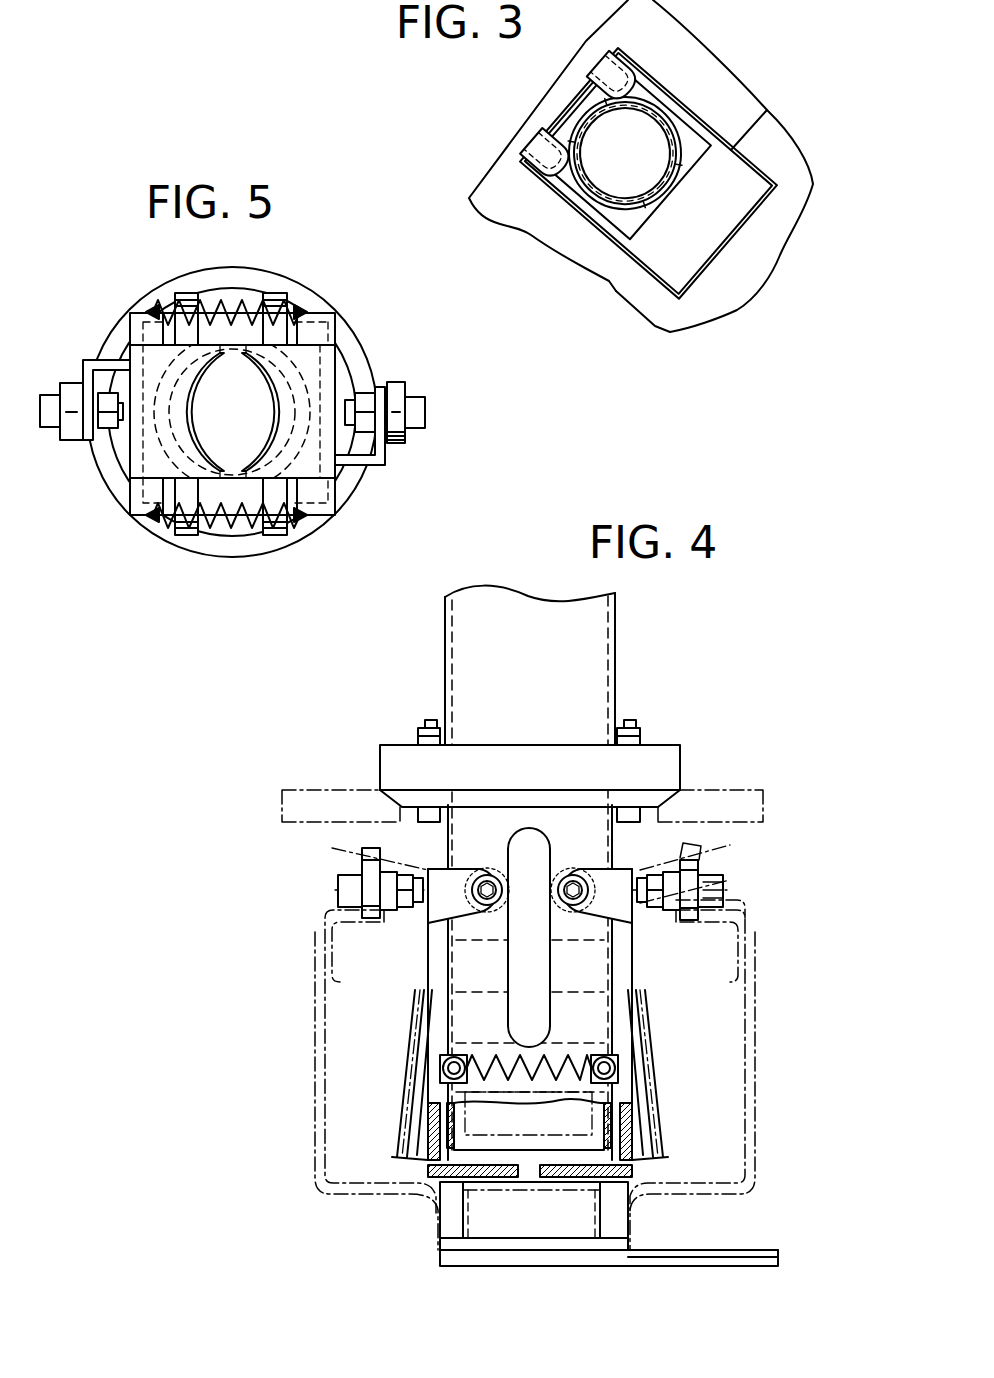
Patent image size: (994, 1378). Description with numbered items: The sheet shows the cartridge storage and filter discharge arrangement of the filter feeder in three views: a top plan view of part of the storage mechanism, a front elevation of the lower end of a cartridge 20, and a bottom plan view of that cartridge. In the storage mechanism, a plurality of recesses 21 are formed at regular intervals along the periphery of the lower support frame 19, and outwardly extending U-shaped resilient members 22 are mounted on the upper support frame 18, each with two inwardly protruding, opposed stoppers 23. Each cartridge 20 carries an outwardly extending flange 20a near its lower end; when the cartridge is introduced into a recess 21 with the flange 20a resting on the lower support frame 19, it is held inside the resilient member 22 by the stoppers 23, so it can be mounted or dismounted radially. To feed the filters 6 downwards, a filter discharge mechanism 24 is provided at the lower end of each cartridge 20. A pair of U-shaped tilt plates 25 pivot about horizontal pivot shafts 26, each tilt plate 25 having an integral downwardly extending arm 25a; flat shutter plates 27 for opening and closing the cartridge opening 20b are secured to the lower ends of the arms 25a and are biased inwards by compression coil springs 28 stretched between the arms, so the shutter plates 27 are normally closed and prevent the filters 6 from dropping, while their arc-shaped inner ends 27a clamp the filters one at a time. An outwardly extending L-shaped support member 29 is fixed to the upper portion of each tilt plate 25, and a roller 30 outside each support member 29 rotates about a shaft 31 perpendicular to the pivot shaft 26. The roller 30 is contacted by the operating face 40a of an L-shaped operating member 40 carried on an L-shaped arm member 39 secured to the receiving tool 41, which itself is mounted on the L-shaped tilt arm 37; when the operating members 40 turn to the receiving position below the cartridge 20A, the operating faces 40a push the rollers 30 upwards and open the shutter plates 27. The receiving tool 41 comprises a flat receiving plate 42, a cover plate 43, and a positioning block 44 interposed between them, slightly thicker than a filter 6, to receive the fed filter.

In FIG. 3, the filter 6 is at (680, 170).
In FIG. 4, the filter 6 is at (660, 1138).
In FIG. 3, the upper support frame 18 is at (645, 307).
In FIG. 3, the lower support frame 19 is at (521, 235).
In FIG. 4, the lower support frame 19 is at (740, 788).
In FIG. 5, the cartridge 20 is at (228, 314).
In FIG. 4, the cartridge 20 is at (530, 982).
In FIG. 3, the cartridge 20A is at (620, 207).
In FIG. 4, the cartridge 20A is at (615, 655).
In FIG. 3, the flange 20a is at (620, 223).
In FIG. 4, the flange 20a is at (675, 753).
In FIG. 5, the opening 20b is at (210, 405).
In FIG. 4, the opening 20b is at (533, 1153).
In FIG. 3, the recess 21 is at (540, 150).
In FIG. 3, the resilient member 22 is at (562, 205).
In FIG. 3, the stopper 23 is at (546, 140).
In FIG. 4, the filter discharge mechanism 24 is at (783, 822).
In FIG. 5, the tilt plate 25 is at (337, 363).
In FIG. 4, the tilt plate 25 is at (426, 955).
In FIG. 4, the arm 25a is at (644, 975).
In FIG. 5, the pivot shaft 26 is at (187, 293).
In FIG. 4, the pivot shaft 26 is at (573, 905).
In FIG. 5, the shutter plate 27 is at (147, 463).
In FIG. 4, the shutter plate 27 is at (477, 1183).
In FIG. 5, the arc-shaped inner end 27a is at (204, 448).
In FIG. 4, the arc-shaped inner end 27a is at (553, 1182).
In FIG. 5, the compression coil spring 28 is at (217, 523).
In FIG. 4, the compression coil spring 28 is at (558, 1080).
In FIG. 5, the support member 29 is at (361, 465).
In FIG. 4, the support member 29 is at (660, 858).
In FIG. 5, the roller 30 is at (70, 438).
In FIG. 4, the roller 30 is at (362, 858).
In FIG. 5, the shaft 31 is at (423, 395).
In FIG. 4, the shaft 31 is at (722, 880).
In FIG. 4, the tilt arm 37 is at (713, 1266).
In FIG. 4, the arm member 39 is at (756, 1095).
In FIG. 4, the operating member 40 is at (338, 972).
In FIG. 4, the operating face 40a is at (745, 900).
In FIG. 4, the receiving tool 41 is at (440, 1212).
In FIG. 4, the receiving plate 42 is at (438, 1245).
In FIG. 4, the cover plate 43 is at (430, 1185).
In FIG. 4, the positioning block 44 is at (437, 1227).